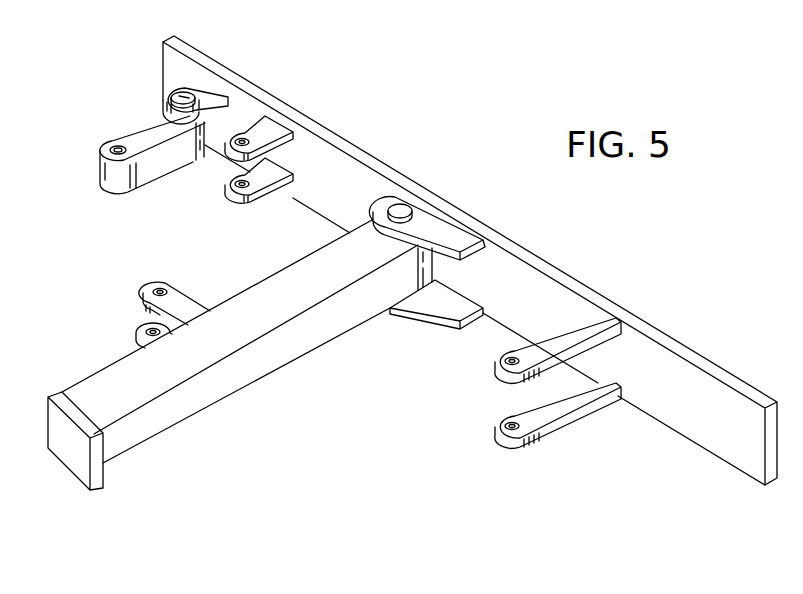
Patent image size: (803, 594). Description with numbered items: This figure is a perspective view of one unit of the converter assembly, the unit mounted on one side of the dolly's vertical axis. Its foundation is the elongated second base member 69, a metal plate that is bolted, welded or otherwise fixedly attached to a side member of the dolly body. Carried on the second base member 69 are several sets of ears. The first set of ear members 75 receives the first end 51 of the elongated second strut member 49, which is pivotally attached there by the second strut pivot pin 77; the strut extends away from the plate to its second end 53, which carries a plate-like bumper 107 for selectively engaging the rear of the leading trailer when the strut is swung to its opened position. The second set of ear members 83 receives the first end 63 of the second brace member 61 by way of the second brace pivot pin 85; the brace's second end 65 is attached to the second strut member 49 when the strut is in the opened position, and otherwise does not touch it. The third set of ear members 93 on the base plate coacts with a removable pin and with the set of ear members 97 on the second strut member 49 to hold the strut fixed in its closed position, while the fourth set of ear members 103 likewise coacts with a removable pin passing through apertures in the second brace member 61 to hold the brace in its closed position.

The second strut member 49 is at (281, 347).
The first end of second strut member 51 is at (306, 266).
The second end of second strut member 53 is at (110, 385).
The second brace member 61 is at (118, 142).
The first end of second brace member 63 is at (156, 122).
The second end of second brace member 65 is at (100, 177).
The second base member 69 is at (698, 396).
The first set of ear members 75 is at (437, 248).
The second strut pivot pin 77 is at (407, 207).
The second set of ear members 83 is at (196, 156).
The second brace pivot pin 85 is at (183, 97).
The third set of ear members 93 is at (567, 352).
The set of ear members 97 is at (178, 288).
The fourth set of ear members 103 is at (230, 168).
The plate-like bumper 107 is at (78, 457).